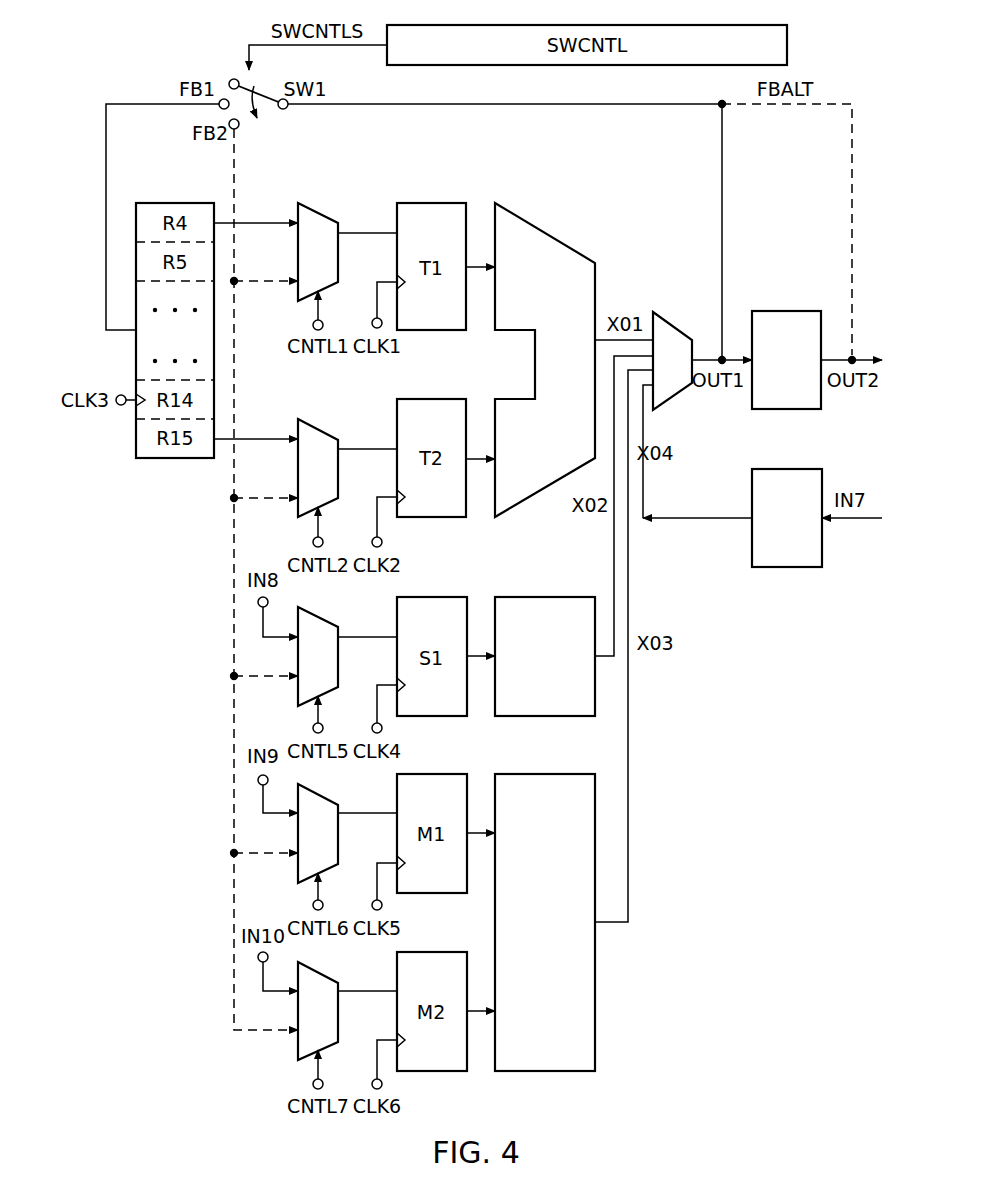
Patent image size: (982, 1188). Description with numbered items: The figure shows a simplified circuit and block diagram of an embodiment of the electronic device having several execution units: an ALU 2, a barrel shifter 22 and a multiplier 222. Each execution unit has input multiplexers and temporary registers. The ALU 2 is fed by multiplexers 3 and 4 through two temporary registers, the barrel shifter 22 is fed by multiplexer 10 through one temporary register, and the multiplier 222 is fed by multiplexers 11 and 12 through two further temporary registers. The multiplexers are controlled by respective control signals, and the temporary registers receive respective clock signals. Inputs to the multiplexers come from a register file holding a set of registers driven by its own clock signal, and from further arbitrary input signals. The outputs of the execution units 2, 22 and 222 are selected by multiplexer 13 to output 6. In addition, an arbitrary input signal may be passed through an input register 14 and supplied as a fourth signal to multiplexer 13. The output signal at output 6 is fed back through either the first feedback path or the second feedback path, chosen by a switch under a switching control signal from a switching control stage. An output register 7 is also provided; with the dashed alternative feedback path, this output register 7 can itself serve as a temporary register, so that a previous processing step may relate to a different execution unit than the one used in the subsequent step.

The execution unit 2 is at (536, 452).
The multiplexer 3 is at (309, 266).
The multiplexer 4 is at (309, 481).
The data output 6 is at (713, 357).
The output register 7 is at (785, 311).
The multiplexer 10 is at (304, 669).
The multiplexer 11 is at (304, 846).
The multiplexer 12 is at (304, 1022).
The multiplexer 13 is at (658, 372).
The input register 14 is at (785, 567).
The barrel shifter 22 is at (545, 716).
The multiplier 222 is at (545, 1071).